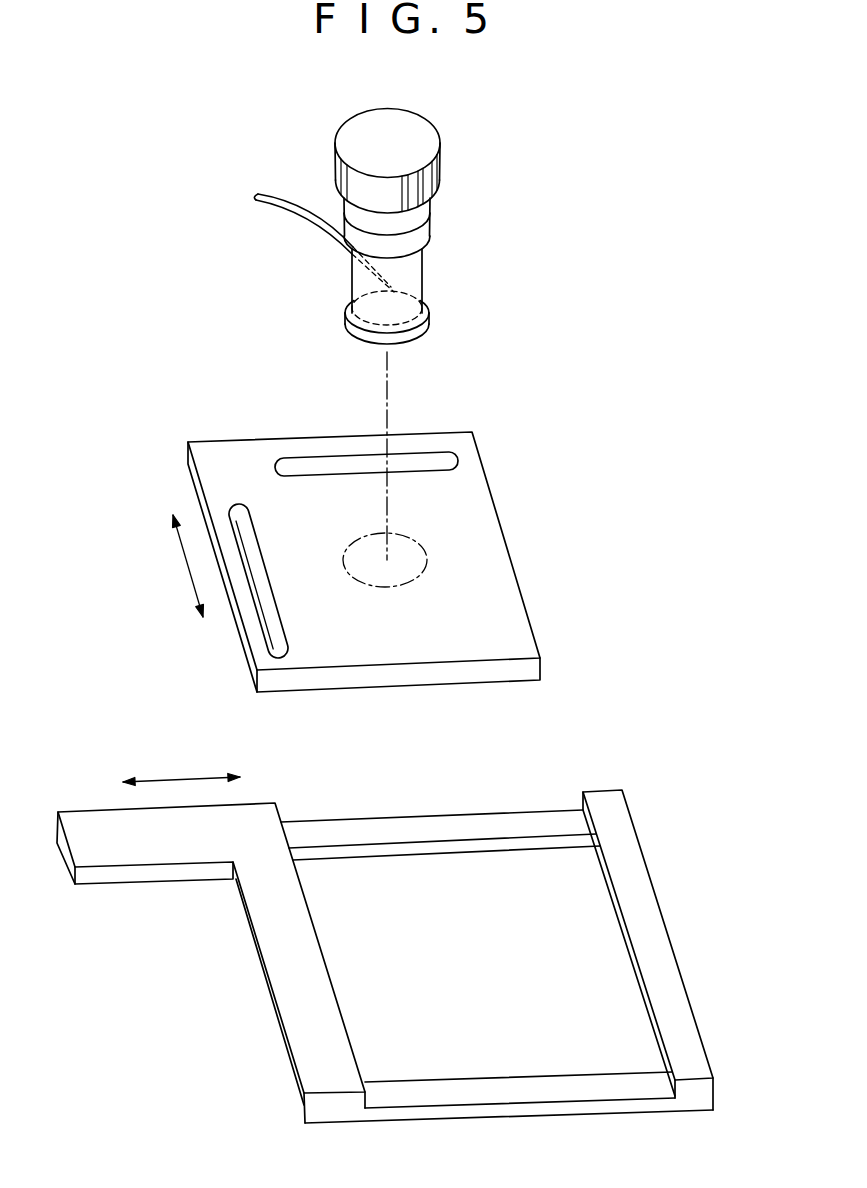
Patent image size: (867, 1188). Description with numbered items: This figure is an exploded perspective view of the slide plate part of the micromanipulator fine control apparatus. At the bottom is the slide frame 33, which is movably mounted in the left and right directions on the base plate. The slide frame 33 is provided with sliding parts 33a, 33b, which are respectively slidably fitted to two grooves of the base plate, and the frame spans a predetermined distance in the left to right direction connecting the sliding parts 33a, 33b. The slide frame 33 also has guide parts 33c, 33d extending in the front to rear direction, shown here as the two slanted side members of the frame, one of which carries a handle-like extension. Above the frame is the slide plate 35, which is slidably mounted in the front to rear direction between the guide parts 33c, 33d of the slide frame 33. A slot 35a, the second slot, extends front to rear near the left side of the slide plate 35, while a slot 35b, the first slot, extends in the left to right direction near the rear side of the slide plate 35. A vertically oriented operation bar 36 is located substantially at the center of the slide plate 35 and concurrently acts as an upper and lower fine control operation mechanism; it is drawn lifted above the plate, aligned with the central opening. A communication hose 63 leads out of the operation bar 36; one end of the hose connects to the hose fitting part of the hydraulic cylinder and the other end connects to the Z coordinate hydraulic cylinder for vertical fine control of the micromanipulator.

The slide frame 33 is at (642, 798).
The sliding part 33a is at (465, 823).
The sliding part 33b is at (497, 1095).
The guide part 33c is at (280, 980).
The guide part 33d is at (640, 882).
The slide plate 35 is at (515, 485).
The slot 35a is at (268, 630).
The slot 35b is at (328, 463).
The operation bar 36 is at (458, 190).
The communication hose 63 is at (297, 216).